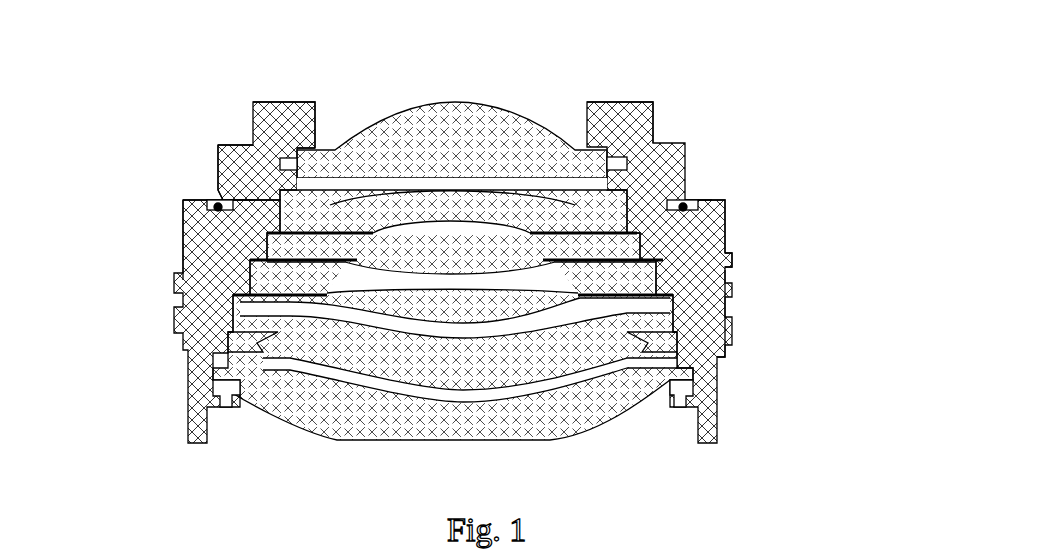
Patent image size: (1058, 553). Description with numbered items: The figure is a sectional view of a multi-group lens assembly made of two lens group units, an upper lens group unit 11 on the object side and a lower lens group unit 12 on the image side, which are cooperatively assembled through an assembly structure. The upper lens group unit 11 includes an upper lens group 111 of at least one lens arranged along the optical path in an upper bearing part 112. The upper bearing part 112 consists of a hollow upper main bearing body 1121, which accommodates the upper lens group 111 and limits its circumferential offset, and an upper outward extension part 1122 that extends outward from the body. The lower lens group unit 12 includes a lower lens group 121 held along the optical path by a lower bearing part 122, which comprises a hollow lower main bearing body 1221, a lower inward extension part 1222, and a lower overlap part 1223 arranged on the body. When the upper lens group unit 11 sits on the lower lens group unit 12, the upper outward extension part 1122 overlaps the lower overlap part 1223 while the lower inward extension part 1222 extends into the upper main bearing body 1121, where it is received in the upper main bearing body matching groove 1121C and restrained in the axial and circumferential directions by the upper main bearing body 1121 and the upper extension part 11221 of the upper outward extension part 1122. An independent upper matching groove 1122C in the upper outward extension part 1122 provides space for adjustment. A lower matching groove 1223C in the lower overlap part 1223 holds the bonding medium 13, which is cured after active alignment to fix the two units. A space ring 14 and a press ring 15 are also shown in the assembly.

The upper lens group unit 11 is at (362, 82).
The upper lens group 111 is at (480, 103).
The upper bearing part 112 is at (219, 147).
The upper main bearing body 1121 is at (232, 140).
The upper main bearing body matching groove 1121C is at (307, 102).
The upper outward extension part 1122 is at (221, 163).
The upper matching groove 1122C is at (219, 152).
The upper extension part 11221 is at (220, 188).
The lower lens group unit 12 is at (498, 234).
The lower lens group 121 is at (172, 283).
The lower bearing part 122 is at (743, 312).
The lower main bearing body 1221 is at (730, 277).
The lower inward extension part 1222 is at (622, 140).
The lower overlap part 1223 is at (722, 198).
The lower matching groove 1223C is at (701, 198).
The bonding medium 13 is at (684, 200).
The space ring 14 is at (733, 332).
The press ring 15 is at (187, 385).